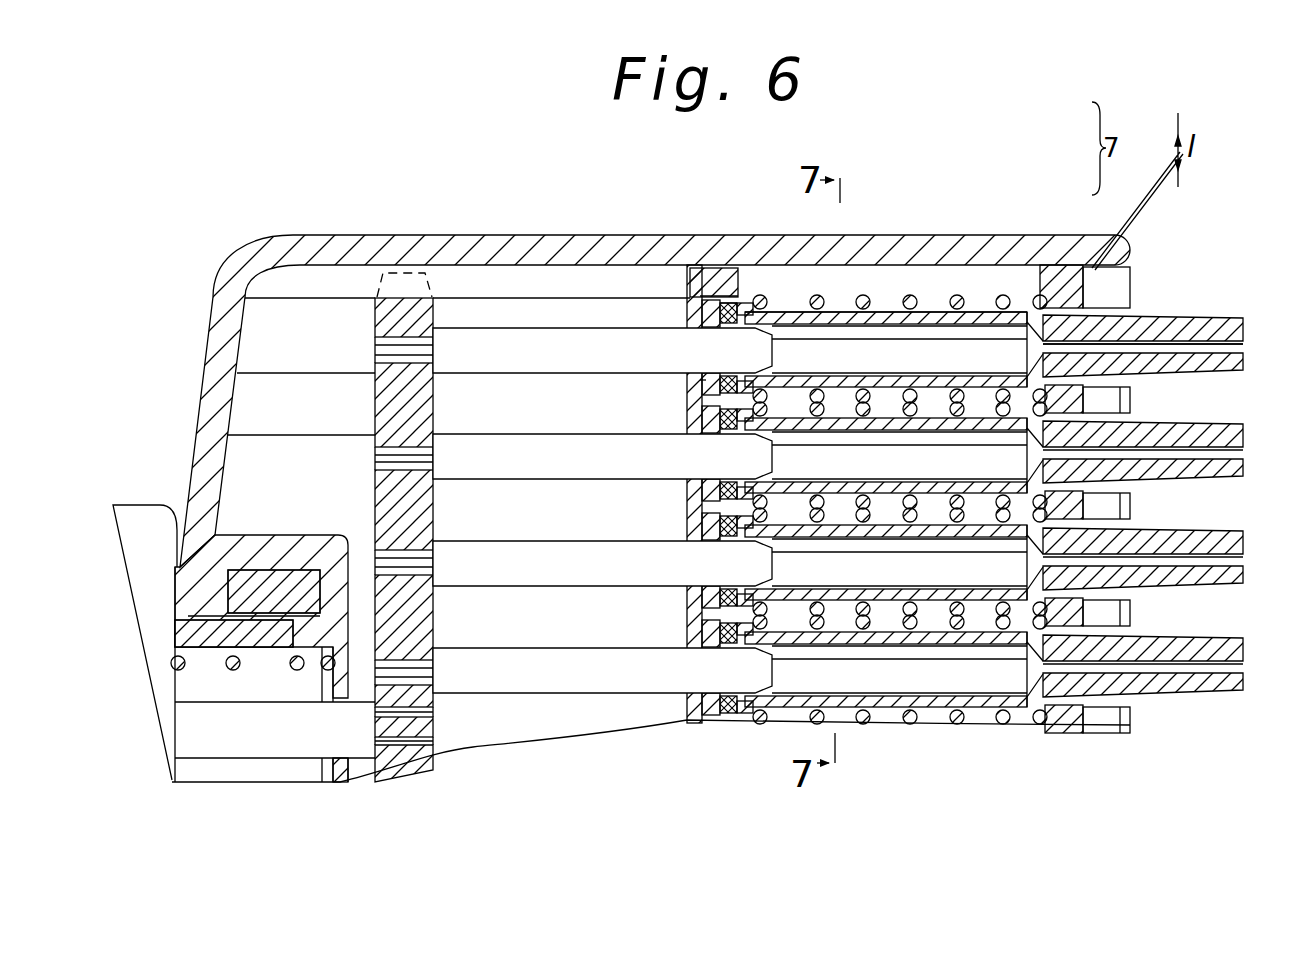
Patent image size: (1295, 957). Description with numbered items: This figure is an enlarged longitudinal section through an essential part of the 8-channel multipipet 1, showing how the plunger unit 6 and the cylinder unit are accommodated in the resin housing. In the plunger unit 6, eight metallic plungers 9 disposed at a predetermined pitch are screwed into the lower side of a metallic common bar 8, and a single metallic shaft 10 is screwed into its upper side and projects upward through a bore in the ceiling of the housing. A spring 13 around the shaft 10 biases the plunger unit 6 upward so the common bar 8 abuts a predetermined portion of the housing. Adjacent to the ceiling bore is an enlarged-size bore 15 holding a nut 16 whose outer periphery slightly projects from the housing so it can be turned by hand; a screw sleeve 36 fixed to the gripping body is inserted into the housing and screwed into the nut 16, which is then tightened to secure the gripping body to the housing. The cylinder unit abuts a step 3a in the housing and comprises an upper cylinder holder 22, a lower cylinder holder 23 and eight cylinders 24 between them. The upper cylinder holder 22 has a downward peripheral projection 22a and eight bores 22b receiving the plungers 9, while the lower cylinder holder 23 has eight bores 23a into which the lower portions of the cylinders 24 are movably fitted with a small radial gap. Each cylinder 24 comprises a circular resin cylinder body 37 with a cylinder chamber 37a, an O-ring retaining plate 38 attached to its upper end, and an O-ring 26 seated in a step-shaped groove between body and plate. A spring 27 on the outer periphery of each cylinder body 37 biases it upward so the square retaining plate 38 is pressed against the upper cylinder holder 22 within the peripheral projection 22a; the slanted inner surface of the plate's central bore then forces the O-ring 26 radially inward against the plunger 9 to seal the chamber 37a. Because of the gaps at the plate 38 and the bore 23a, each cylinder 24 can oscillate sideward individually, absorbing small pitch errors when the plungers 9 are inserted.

The 8-channel multipipet 1 is at (865, 413).
The step 3a is at (693, 268).
The plunger unit 6 is at (652, 452).
The common bar 8 is at (405, 320).
The plunger 9 is at (480, 350).
The shaft 10 is at (283, 720).
The spring 13 is at (233, 670).
The enlarged-size bore 15 is at (208, 628).
The nut 16 is at (263, 588).
The upper cylinder holder 22 is at (722, 266).
The peripheral projection 22a is at (738, 272).
The bore 22b is at (683, 323).
The lower cylinder holder 23 is at (1063, 298).
The bore 23a is at (1065, 310).
The cylinder 24 is at (838, 424).
The O-ring 26 is at (742, 302).
The spring 27 is at (872, 298).
The screw sleeve 36 is at (203, 620).
The cylinder body 37 is at (770, 437).
The cylinder chamber 37a is at (933, 337).
The O-ring retaining plate 38 is at (705, 383).